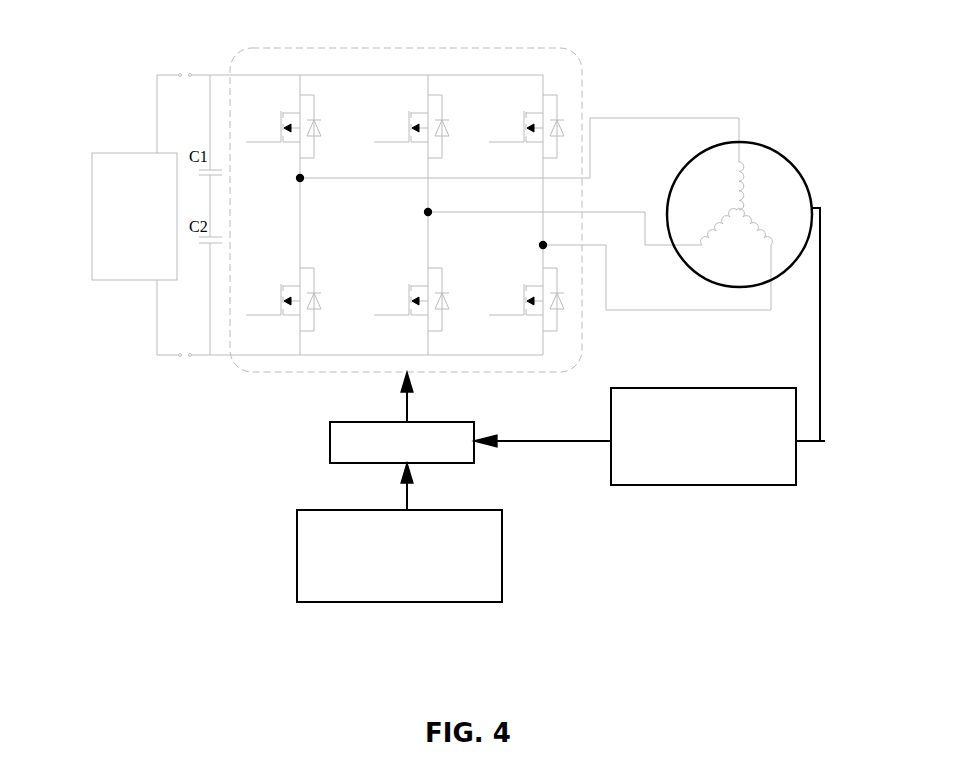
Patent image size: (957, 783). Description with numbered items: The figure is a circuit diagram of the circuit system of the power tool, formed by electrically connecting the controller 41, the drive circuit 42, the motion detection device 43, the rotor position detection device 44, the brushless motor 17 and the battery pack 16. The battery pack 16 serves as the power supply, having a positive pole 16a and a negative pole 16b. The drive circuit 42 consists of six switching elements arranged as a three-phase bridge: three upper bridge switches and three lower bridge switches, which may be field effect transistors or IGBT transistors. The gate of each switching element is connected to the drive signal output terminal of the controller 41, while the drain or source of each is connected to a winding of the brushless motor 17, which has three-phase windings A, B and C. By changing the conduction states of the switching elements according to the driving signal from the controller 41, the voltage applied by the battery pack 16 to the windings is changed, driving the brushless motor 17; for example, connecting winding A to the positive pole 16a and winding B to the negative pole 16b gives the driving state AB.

The battery pack 16 is at (135, 153).
The positive pole of the power supply 16a is at (176, 64).
The negative pole of the power supply 16b is at (169, 367).
The brushless motor 17 is at (779, 152).
The controller 41 is at (330, 440).
The drive circuit 42 is at (297, 48).
The motion detection device 43 is at (297, 540).
The rotor position detection device 44 is at (717, 485).